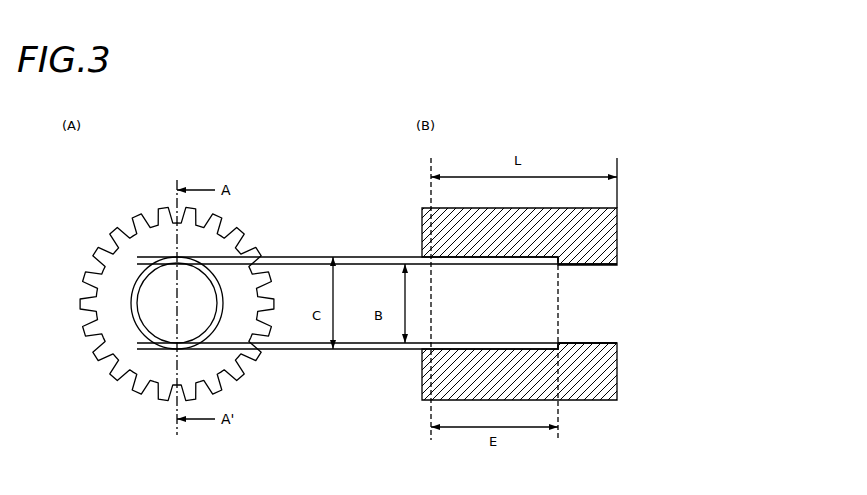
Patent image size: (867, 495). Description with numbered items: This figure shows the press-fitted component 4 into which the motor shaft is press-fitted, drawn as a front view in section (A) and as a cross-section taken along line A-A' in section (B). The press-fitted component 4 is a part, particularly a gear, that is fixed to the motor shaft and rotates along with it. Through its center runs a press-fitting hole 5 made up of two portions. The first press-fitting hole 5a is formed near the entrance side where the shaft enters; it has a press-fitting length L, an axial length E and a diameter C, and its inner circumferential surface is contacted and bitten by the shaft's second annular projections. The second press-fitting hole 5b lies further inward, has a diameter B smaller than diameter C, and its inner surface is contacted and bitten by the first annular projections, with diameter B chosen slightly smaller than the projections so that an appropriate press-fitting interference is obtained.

The press-fitted component 4 is at (138, 243).
The press-fitting hole 5 is at (619, 273).
The first press-fitting hole 5a is at (140, 258).
The second press-fitting hole 5b is at (216, 303).